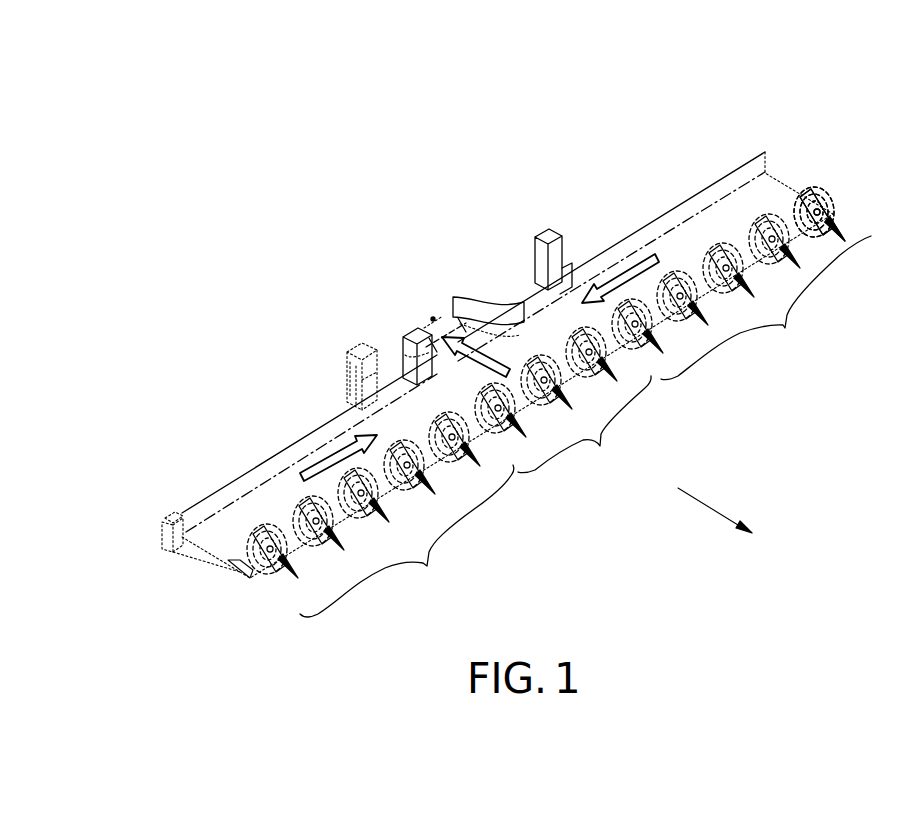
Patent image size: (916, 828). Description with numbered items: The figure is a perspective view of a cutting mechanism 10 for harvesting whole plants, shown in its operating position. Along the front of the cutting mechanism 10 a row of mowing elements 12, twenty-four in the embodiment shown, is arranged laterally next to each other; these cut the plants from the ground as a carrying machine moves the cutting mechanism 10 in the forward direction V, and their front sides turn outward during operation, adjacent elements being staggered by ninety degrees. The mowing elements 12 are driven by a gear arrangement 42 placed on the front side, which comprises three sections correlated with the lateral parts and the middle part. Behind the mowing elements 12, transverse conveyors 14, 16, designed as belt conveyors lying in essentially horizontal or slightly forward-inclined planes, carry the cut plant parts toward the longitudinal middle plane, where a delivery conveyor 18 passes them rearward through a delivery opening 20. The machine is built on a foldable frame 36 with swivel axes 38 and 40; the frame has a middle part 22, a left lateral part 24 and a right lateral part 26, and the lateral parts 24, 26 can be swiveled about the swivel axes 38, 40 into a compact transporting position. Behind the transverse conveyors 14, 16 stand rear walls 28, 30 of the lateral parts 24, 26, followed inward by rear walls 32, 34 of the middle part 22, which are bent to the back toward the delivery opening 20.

The cutting mechanism 10 is at (659, 117).
The mowing elements 12 is at (828, 248).
The transverse conveyor 14 is at (710, 228).
The transverse conveyor 16 is at (293, 473).
The delivery conveyor 18 is at (430, 332).
The delivery opening 20 is at (433, 318).
The middle part 22 is at (584, 426).
The left lateral part 24 is at (766, 308).
The right lateral part 26 is at (407, 541).
The rear wall 28 is at (631, 245).
The rear wall 30 is at (323, 428).
The rear wall 32 is at (487, 315).
The rear wall 34 is at (397, 348).
The foldable frame 36 is at (352, 352).
The swivel axis 38 is at (343, 373).
The swivel axis 40 is at (583, 268).
The gear arrangement 42 is at (373, 505).